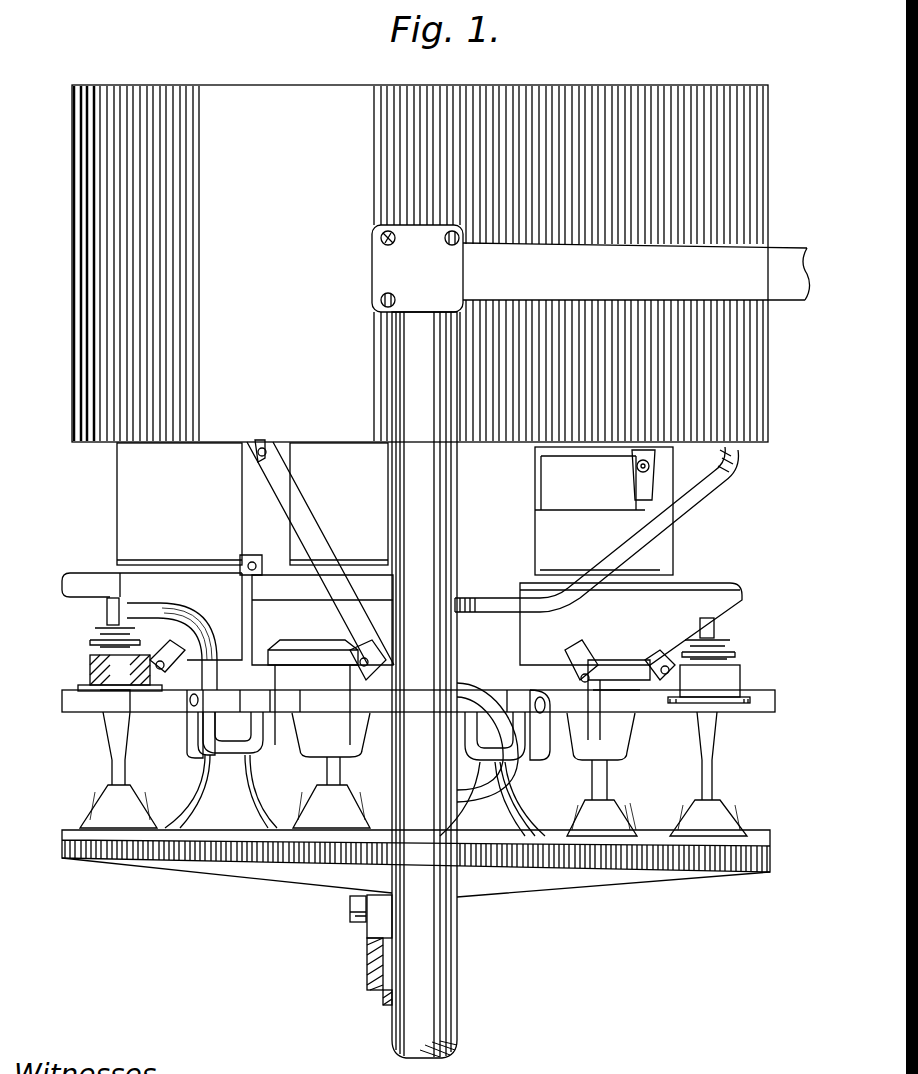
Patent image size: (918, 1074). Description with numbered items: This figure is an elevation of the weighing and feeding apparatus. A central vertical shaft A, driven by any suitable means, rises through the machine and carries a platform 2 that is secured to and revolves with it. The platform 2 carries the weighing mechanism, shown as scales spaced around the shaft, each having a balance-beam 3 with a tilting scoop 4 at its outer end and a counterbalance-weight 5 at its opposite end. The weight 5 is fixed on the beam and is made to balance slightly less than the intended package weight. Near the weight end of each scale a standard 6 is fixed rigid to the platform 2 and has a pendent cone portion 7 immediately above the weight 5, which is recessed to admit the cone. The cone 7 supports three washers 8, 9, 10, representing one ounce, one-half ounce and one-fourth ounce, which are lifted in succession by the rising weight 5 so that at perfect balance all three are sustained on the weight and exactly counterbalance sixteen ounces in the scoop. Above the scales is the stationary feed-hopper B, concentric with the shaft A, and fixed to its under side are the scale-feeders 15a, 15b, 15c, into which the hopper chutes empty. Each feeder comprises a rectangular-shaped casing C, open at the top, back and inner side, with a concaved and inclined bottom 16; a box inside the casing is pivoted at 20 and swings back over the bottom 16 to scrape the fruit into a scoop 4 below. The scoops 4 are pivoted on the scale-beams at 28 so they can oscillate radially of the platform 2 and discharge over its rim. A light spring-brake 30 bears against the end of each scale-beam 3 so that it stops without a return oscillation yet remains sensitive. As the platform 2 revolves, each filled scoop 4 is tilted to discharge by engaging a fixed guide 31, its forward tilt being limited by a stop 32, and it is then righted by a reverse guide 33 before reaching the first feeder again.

The platform 2 is at (225, 870).
The balance-beam 3 is at (250, 700).
The tilting scoop 4 is at (402, 619).
The counterbalance-weight 5 is at (90, 670).
The standard 6 is at (205, 634).
The pendent cone portion 7 is at (107, 622).
The washer 8 is at (100, 650).
The washer 9 is at (152, 655).
The washer 10 is at (98, 635).
The scale-feeder 15a is at (179, 504).
The scale-feeder 15b is at (339, 504).
The scale-feeder 15c is at (604, 511).
The concaved and inclined bottom 16 is at (668, 580).
The pivot 20 is at (650, 466).
The scoop pivot 28 is at (580, 678).
The spring-brake 30 is at (112, 768).
The fixed guide 31 is at (489, 600).
The stop 32 is at (459, 692).
The reverse guide 33 is at (455, 690).
The central vertical shaft A is at (380, 1004).
The stationary feed-hopper B is at (420, 263).
The rectangular-shaped casing C is at (357, 501).